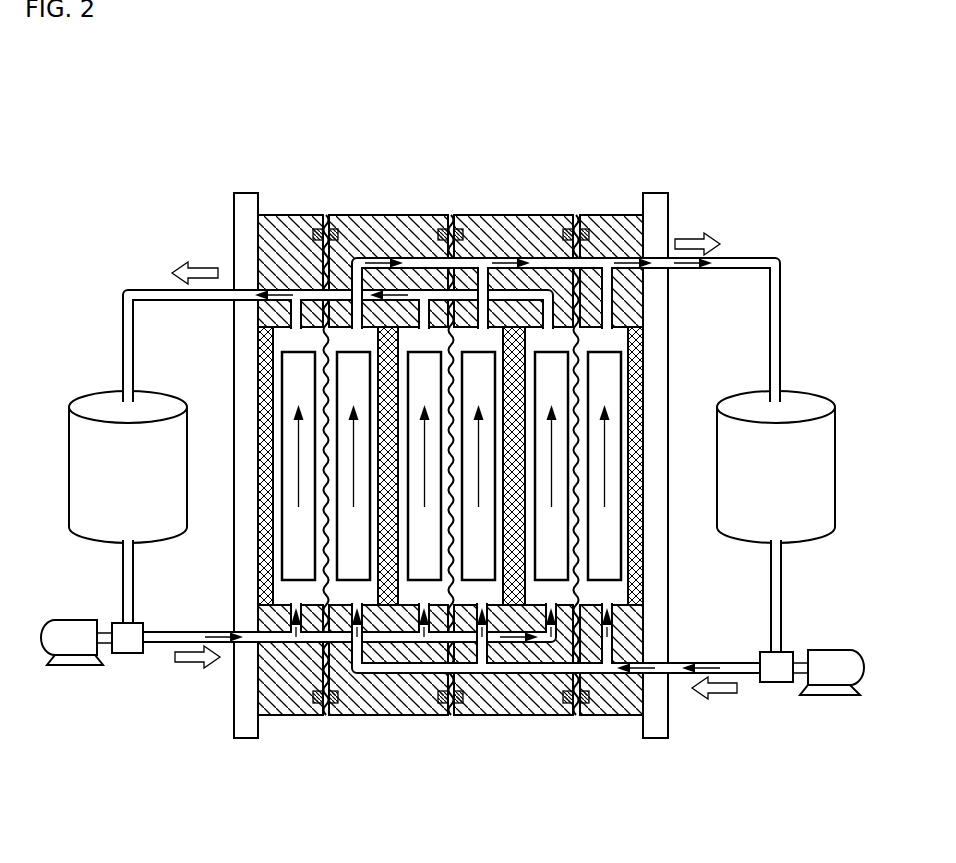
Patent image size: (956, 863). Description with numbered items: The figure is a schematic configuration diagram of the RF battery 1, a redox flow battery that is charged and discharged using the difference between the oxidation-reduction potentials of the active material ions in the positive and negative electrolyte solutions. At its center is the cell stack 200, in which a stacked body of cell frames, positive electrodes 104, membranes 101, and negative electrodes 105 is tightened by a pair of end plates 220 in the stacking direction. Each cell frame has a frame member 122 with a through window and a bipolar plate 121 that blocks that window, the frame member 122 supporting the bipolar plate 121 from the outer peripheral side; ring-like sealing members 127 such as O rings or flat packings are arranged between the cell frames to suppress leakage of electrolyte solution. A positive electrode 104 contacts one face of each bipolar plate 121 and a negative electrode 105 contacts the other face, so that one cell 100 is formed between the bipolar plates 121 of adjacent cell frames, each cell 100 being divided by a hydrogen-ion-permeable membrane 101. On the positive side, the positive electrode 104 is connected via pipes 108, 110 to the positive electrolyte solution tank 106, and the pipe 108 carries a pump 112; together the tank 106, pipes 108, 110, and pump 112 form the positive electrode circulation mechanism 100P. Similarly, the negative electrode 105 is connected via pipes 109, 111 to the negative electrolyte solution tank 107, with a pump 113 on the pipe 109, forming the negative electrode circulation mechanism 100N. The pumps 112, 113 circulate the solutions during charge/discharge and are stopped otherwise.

The RF battery 1 is at (107, 104).
The cell stack 200 is at (653, 164).
The end plate 220 is at (248, 730).
The frame member 122 is at (284, 214).
The sealing member 127 is at (340, 214).
The bipolar plate 121 is at (262, 372).
The cell 100 is at (453, 506).
The membrane 101 is at (343, 585).
The positive electrode 104 is at (352, 556).
The negative electrode 105 is at (420, 592).
The positive electrolyte solution tank 106 is at (86, 392).
The negative electrolyte solution tank 107 is at (818, 392).
The pipe 108 is at (160, 645).
The pipe 109 is at (744, 678).
The pipe 110 is at (129, 288).
The pipe 111 is at (768, 256).
The pump 112 is at (62, 626).
The pump 113 is at (832, 650).
The positive electrode circulation mechanism 100P is at (111, 689).
The negative electrode circulation mechanism 100N is at (803, 710).